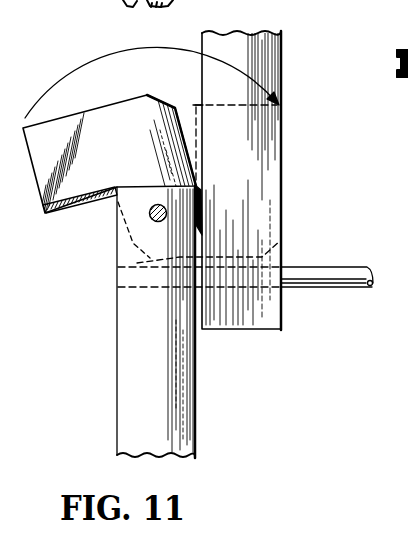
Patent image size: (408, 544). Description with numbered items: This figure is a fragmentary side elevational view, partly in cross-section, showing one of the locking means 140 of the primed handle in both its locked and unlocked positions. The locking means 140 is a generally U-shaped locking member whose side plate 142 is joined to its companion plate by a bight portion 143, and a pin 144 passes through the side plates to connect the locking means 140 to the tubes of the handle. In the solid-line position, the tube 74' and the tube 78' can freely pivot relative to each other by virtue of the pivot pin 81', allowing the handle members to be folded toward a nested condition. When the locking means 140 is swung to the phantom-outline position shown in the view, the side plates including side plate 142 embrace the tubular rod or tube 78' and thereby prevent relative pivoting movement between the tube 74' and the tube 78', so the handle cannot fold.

The locking means 140 is at (93, 63).
The side plate 142 is at (122, 122).
The bight portion 143 is at (77, 205).
The pin 144 is at (160, 224).
The tube 74' is at (199, 322).
The tube 78' is at (274, 165).
The pivot pin 81' is at (327, 307).